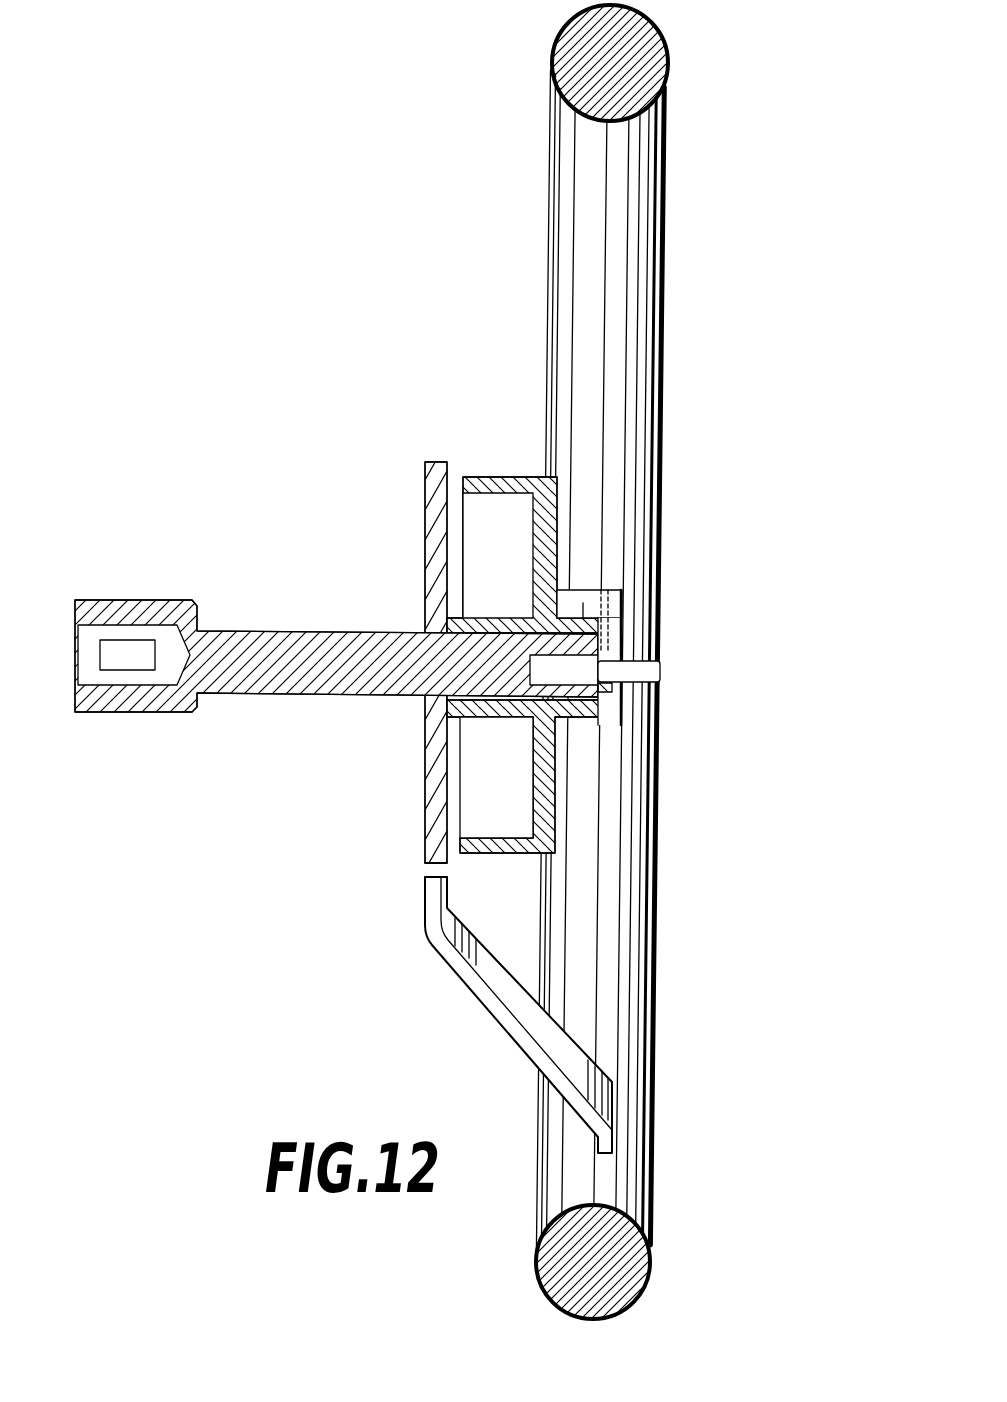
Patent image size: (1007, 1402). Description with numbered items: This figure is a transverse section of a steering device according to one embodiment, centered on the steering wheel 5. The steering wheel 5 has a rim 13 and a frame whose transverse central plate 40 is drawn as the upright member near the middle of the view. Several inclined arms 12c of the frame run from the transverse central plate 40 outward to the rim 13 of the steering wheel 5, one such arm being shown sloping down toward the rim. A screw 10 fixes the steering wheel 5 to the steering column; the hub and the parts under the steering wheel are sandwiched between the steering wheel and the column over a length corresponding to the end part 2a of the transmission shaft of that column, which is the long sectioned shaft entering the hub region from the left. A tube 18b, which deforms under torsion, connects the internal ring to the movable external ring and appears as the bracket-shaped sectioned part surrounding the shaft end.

The end part of the transmission shaft 2a is at (288, 672).
The steering wheel 5 is at (646, 662).
The rim 13 is at (601, 951).
The screw 10 is at (636, 670).
The inclined arms 12c is at (527, 1012).
The tube deformed under torsion 18b is at (493, 617).
The transverse central plate 40 is at (426, 790).